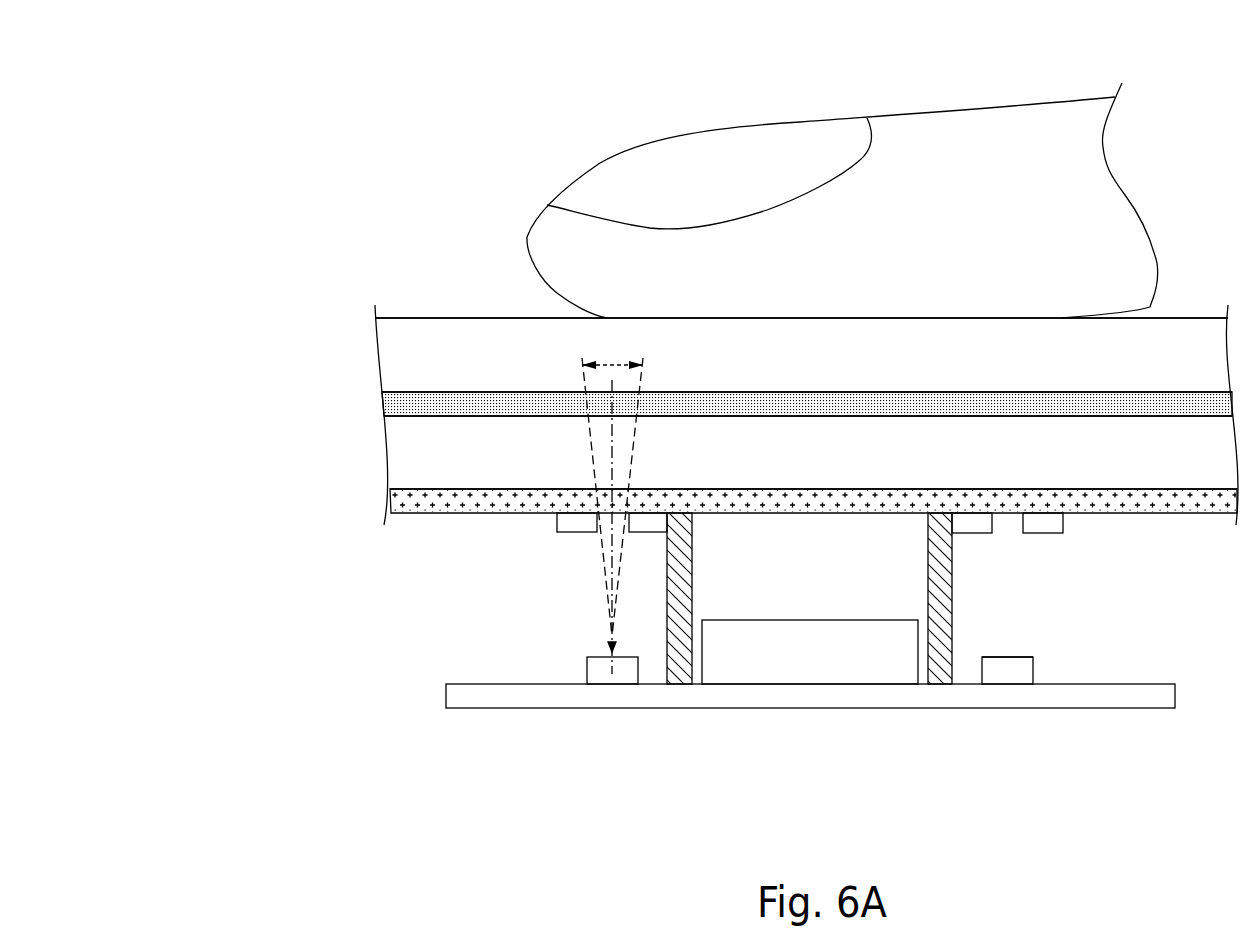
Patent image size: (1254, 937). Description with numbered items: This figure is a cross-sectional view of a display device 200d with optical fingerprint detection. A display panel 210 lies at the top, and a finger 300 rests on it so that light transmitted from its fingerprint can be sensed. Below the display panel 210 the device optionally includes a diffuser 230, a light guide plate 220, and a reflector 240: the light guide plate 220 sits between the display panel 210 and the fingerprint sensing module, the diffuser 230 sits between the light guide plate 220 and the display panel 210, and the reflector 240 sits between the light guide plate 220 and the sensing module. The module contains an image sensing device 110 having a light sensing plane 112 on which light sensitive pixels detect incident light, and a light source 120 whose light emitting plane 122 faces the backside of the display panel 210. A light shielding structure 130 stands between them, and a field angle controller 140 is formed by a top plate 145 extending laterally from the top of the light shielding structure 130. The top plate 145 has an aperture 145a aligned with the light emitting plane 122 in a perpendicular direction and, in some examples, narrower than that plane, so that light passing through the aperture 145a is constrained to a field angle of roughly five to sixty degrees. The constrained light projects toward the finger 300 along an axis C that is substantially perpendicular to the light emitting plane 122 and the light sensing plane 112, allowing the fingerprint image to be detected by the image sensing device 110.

The display device 200d is at (305, 40).
The finger 300 is at (943, 132).
The display panel 210 is at (383, 355).
The light guide plate 220 is at (405, 455).
The diffuser 230 is at (390, 401).
The reflector 240 is at (393, 497).
The field angle controller 140 is at (886, 572).
The top plate 145 is at (1040, 522).
The aperture 145a is at (1010, 533).
The light shielding structure 130 is at (940, 672).
The image sensing device 110 is at (748, 672).
The light sensing plane 112 is at (840, 622).
The light source 120 is at (1000, 670).
The light emitting plane 122 is at (1015, 658).
The axis C is at (612, 580).